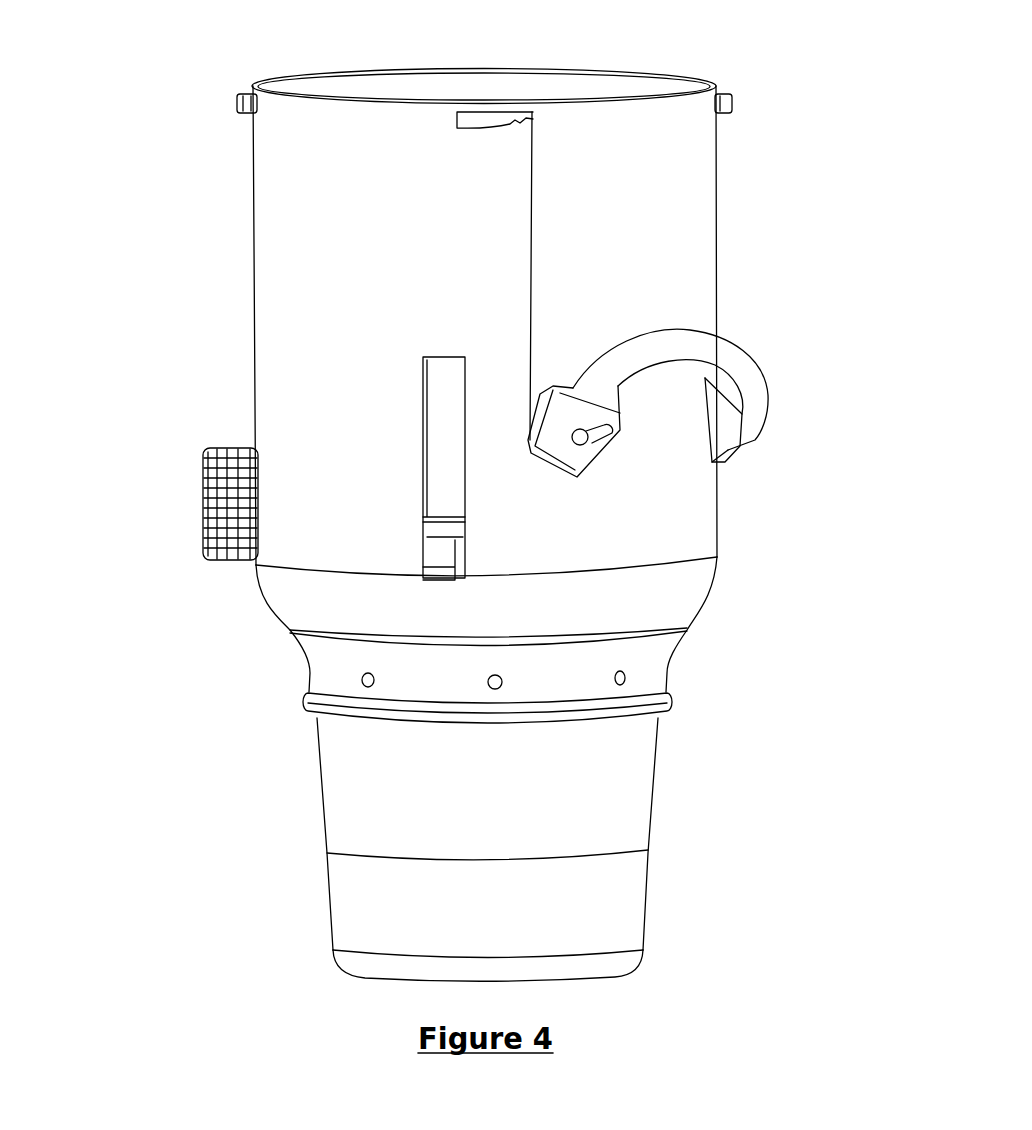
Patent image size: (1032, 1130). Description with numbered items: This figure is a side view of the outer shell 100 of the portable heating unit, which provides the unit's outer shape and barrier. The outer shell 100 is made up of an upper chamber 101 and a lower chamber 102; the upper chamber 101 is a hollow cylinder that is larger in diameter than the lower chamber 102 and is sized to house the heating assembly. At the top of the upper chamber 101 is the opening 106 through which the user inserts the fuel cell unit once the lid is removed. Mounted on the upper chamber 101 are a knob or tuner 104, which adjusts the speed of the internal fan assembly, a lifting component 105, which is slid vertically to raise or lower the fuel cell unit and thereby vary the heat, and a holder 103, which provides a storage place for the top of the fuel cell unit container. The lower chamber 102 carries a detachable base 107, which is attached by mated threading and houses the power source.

The outer shell 100 is at (473, 496).
The upper chamber 101 is at (381, 356).
The lower chamber 102 is at (491, 837).
The holder 103 is at (738, 371).
The knob or tuner 104 is at (242, 562).
The lifting component 105 is at (440, 558).
The opening 106 is at (484, 62).
The base 107 is at (367, 923).